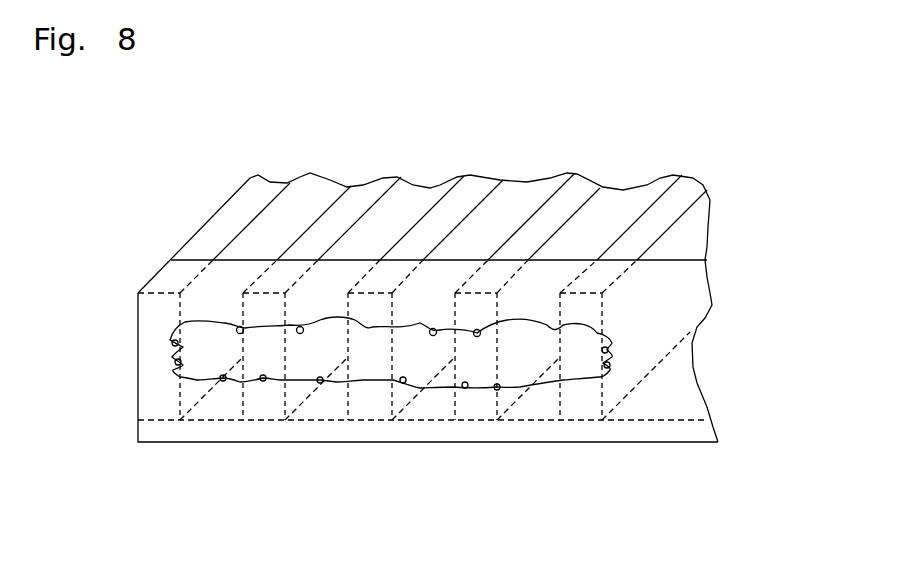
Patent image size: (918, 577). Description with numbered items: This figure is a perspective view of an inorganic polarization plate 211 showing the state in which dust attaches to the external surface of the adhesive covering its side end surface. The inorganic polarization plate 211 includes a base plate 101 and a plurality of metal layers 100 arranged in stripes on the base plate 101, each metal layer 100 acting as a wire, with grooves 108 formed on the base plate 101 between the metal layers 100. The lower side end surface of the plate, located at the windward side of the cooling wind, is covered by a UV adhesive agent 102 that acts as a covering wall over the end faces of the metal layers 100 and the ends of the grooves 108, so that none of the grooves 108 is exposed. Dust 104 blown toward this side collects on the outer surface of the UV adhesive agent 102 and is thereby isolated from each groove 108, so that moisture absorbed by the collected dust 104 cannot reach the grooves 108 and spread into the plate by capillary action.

The metal layer 100 is at (263, 393).
The base plate 101 is at (495, 420).
The UV adhesive agent 102 is at (670, 258).
The dust 104 is at (402, 380).
The groove 108 is at (425, 210).
The inorganic polarization plate 211 is at (693, 90).